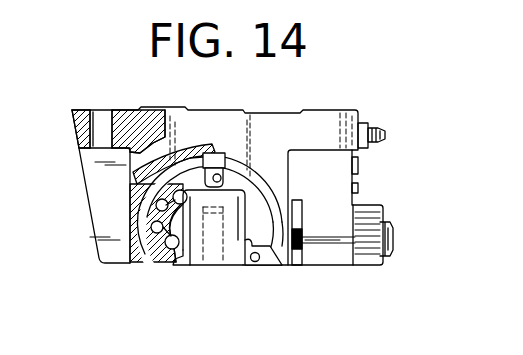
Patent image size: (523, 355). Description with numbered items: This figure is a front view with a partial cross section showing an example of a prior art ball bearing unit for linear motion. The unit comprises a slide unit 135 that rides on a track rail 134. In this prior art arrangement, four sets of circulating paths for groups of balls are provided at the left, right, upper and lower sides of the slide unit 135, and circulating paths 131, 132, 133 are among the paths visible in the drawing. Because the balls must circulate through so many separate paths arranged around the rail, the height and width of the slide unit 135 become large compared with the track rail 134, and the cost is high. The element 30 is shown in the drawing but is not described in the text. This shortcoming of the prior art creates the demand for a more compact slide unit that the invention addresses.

The housing 30 is at (130, 201).
The circulating path 131 is at (153, 256).
The circulating path 132 is at (252, 186).
The circulating path 133 is at (273, 252).
The track rail 134 is at (229, 268).
The slide unit 135 is at (293, 126).